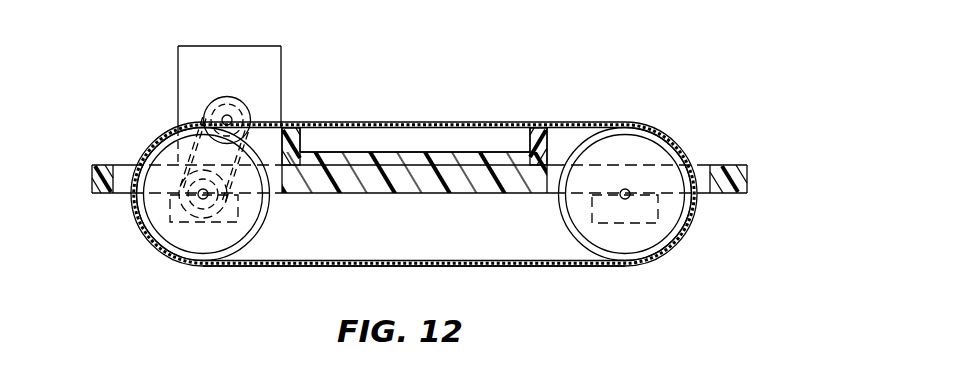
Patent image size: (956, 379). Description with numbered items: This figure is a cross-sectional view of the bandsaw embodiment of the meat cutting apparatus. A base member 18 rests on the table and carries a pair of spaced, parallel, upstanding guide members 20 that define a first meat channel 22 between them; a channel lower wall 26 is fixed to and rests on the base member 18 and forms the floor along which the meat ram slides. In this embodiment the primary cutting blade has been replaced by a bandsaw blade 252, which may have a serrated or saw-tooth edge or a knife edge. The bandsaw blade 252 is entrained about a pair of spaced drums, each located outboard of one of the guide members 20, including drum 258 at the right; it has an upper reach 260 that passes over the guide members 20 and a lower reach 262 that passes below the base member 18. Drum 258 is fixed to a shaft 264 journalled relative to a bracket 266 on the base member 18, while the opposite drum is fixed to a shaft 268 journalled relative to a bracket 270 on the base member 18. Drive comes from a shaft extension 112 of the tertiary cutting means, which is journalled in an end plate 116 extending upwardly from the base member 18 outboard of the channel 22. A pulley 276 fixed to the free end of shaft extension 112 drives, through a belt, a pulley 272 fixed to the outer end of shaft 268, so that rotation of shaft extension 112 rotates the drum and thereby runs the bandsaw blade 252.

The base member 18 is at (728, 165).
The guide members 20 is at (290, 136).
The first meat channel 22 is at (528, 134).
The channel lower wall 26 is at (417, 157).
The shaft extension 112 is at (227, 116).
The end plate 116 is at (190, 53).
The bandsaw blade 252 is at (463, 127).
The drum 258 is at (672, 257).
The upper reach 260 is at (407, 122).
The lower reach 262 is at (524, 266).
The shaft 264 is at (629, 190).
The bracket 266 is at (660, 205).
The shaft 268 is at (203, 197).
The bracket 270 is at (243, 210).
The pulley 272 is at (160, 207).
The pulley 276 is at (247, 107).